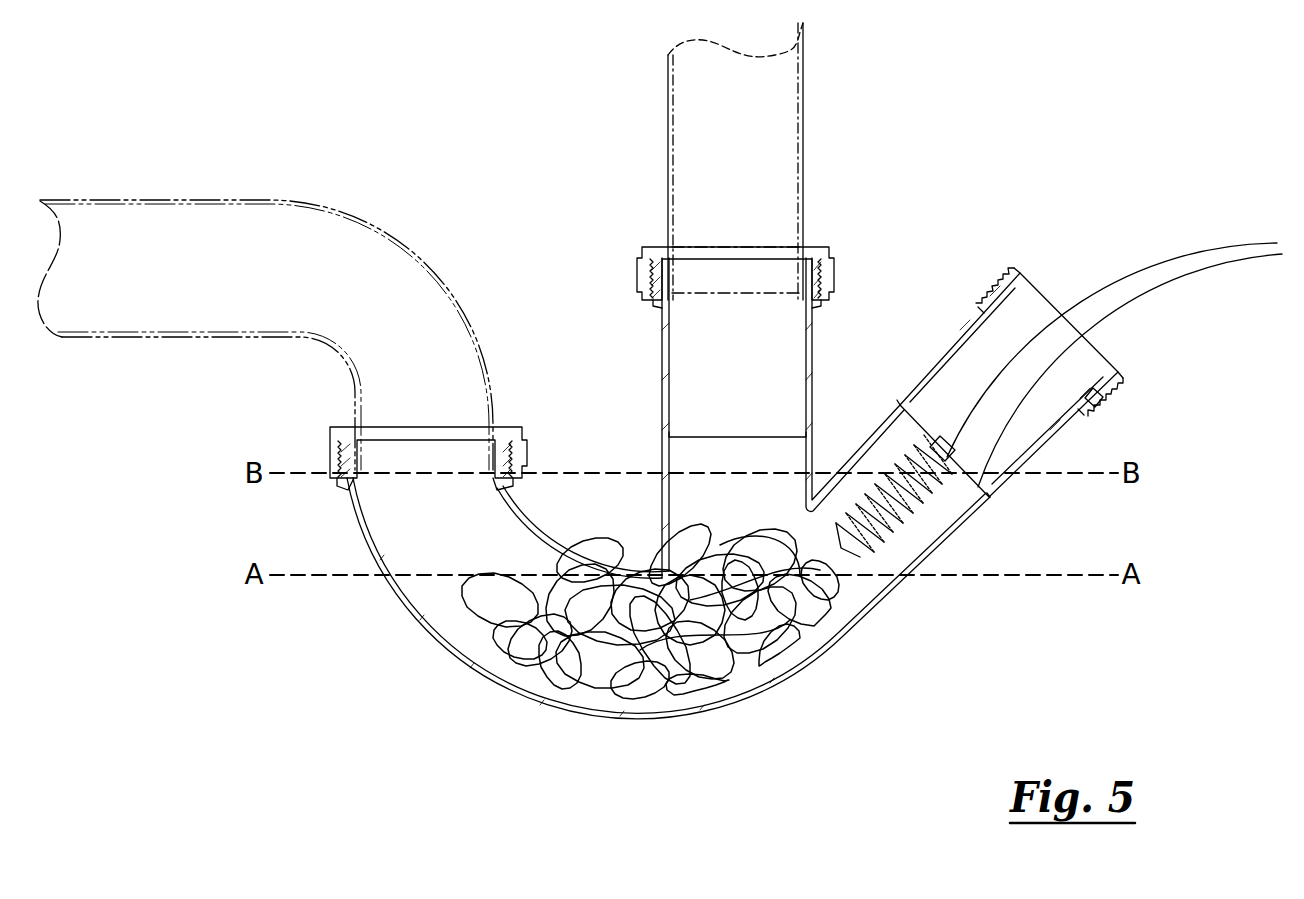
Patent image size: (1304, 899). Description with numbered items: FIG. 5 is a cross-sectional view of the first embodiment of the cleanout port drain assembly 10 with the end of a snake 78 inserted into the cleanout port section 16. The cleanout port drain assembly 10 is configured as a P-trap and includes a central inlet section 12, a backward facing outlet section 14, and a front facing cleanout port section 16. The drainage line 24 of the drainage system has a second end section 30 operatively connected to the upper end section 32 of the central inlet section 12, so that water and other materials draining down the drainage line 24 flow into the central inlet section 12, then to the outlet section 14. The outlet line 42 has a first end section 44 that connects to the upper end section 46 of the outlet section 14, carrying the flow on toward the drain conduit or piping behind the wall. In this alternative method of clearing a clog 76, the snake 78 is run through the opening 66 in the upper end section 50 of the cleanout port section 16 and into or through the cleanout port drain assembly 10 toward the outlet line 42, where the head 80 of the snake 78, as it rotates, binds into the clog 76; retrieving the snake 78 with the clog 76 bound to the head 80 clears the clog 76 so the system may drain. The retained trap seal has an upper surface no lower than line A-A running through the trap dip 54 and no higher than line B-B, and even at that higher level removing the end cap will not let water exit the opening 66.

The cleanout port drain assembly 10 is at (641, 488).
The central inlet section 12 is at (739, 418).
The backward facing outlet section 14 is at (440, 648).
The front facing cleanout port section 16 is at (947, 533).
The drainage line 24 is at (797, 80).
The second end section 30 is at (640, 270).
The upper end section 32 is at (662, 312).
The outlet line 42 is at (138, 210).
The first end section 44 is at (330, 450).
The upper end section 46 is at (343, 492).
The upper end section 50 is at (1077, 414).
The trap dip 54 is at (635, 572).
The opening 66 is at (1028, 310).
The clog 76 is at (747, 677).
The snake 78 is at (1103, 285).
The head 80 is at (845, 490).